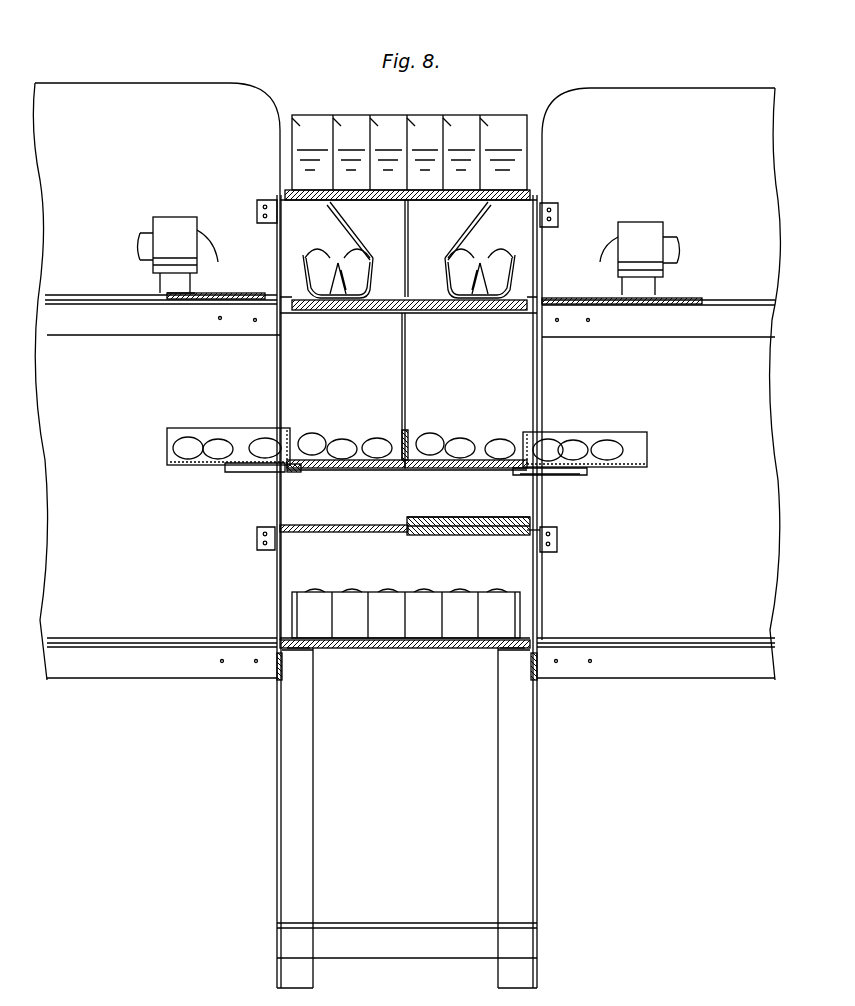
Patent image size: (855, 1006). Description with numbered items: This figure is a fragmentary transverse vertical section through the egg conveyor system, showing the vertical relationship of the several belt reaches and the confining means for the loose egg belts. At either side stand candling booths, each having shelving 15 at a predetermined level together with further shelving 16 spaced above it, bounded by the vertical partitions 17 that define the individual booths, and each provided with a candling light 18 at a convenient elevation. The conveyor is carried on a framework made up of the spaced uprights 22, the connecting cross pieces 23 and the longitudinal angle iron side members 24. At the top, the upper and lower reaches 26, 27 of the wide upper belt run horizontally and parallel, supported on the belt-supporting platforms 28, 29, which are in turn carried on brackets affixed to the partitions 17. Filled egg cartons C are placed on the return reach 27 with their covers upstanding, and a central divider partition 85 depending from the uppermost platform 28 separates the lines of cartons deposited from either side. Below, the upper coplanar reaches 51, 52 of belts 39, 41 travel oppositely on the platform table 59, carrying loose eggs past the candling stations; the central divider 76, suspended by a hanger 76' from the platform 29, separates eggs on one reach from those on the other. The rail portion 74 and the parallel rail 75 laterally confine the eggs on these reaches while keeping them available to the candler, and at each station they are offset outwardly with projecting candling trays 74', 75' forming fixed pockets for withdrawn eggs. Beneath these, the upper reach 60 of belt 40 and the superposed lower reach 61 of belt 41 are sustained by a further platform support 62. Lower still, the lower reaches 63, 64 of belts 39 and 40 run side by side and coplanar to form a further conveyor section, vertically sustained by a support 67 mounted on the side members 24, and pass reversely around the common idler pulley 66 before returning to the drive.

The shelving 15 is at (120, 640).
The upper shelf 16 is at (108, 302).
The vertical partitions 17 is at (78, 103).
The candling light 18 is at (163, 227).
The uprights 22 is at (512, 782).
The connecting braces or cross pieces 23 is at (405, 940).
The side members 24 is at (290, 650).
The upper reach 26 is at (497, 194).
The lower reach 27 is at (476, 312).
The belt-supporting platform 28 is at (322, 200).
The belt-supporting platform 29 is at (348, 312).
The belt 39 is at (290, 468).
The belt 40 is at (530, 530).
The belt 41 is at (535, 470).
The upper reach 51 is at (348, 458).
The upper reach 52 is at (446, 440).
The platform support or table 59 is at (400, 468).
The upper reach 60 is at (510, 534).
The lower reach 61 is at (510, 517).
The platform support 62 is at (345, 532).
The lower reach 63 is at (340, 648).
The lower reach 64 is at (488, 650).
The idler pulley 66 is at (378, 638).
The support 67 is at (432, 650).
The rail portion 74 is at (551, 432).
The candling tray 74' is at (606, 448).
The rail 75 is at (250, 426).
The candling tray 75' is at (217, 463).
The central divider or barrier 76 is at (419, 423).
The hanger 76' is at (428, 386).
The divider partition 85 is at (410, 230).
The carton C is at (385, 130).